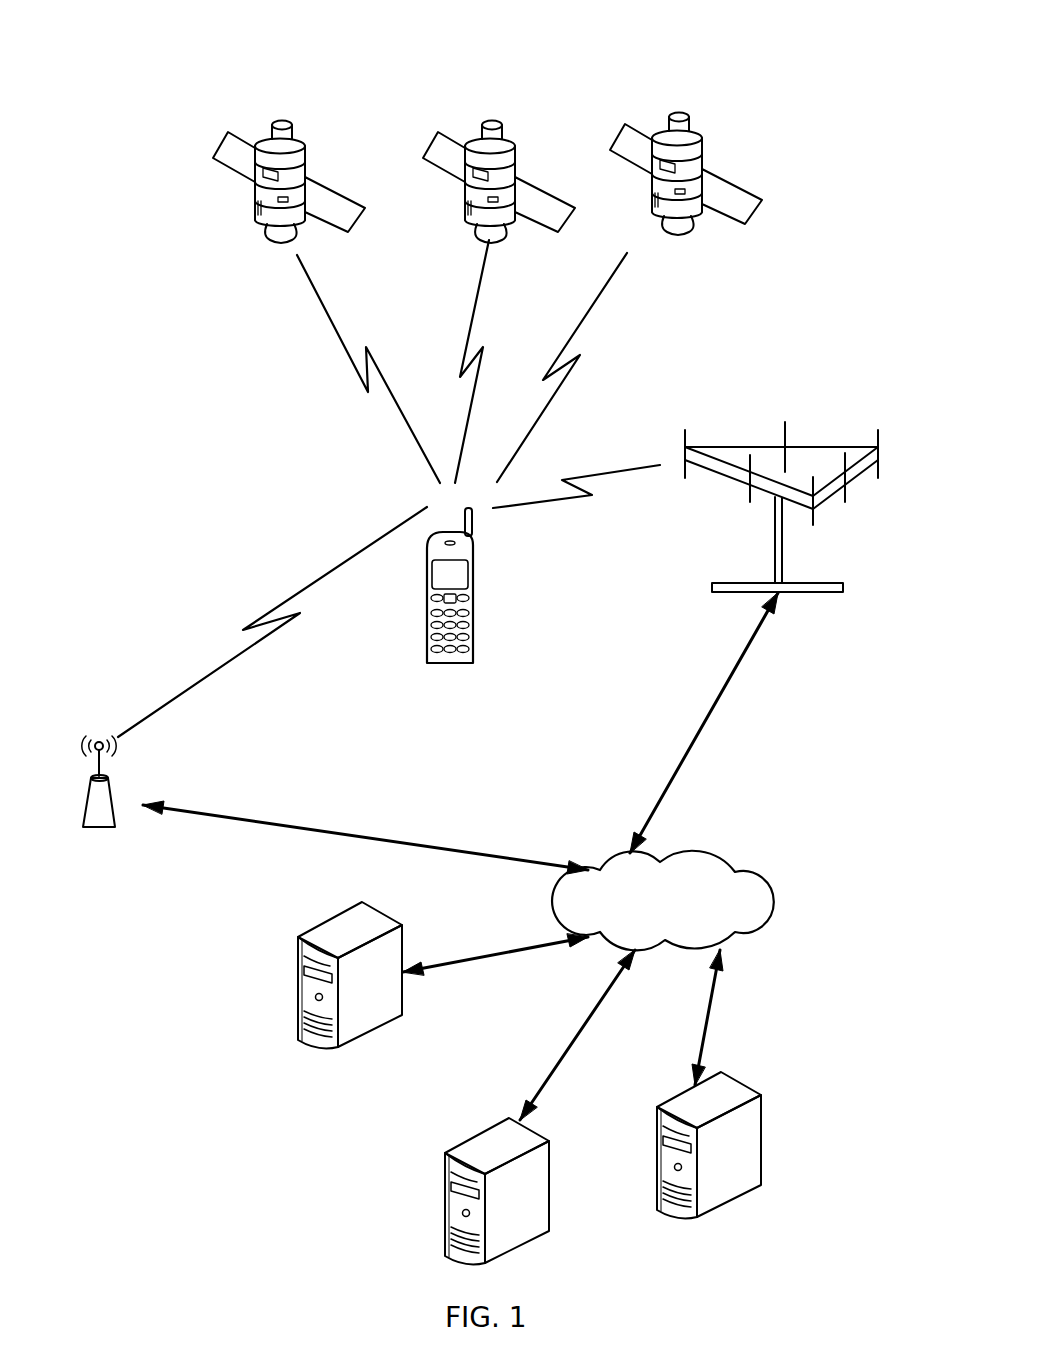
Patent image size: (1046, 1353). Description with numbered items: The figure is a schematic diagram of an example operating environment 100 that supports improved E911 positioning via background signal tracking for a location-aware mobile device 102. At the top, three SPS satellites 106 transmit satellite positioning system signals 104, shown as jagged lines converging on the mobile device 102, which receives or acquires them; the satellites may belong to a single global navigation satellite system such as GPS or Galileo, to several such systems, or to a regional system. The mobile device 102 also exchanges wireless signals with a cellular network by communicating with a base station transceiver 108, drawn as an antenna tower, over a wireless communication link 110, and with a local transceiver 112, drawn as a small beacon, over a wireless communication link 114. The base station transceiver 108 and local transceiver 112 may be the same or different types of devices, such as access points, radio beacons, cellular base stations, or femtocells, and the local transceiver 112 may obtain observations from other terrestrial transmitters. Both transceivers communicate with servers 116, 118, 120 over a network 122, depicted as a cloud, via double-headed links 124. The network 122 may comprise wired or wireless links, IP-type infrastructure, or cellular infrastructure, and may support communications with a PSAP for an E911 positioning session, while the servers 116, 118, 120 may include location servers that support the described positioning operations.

The operating environment 100 is at (815, 63).
The mobile device 102 is at (427, 595).
The satellite positioning system signals 104 is at (330, 308).
The SPS satellites 106 is at (195, 193).
The base station transceiver 108 is at (812, 593).
The wireless communication link 110 is at (545, 499).
The local transceiver 112 is at (100, 828).
The wireless communication link 114 is at (197, 682).
The server 116 is at (372, 910).
The server 118 is at (549, 1143).
The server 120 is at (758, 1095).
The network 122 is at (752, 880).
The links 124 is at (722, 693).